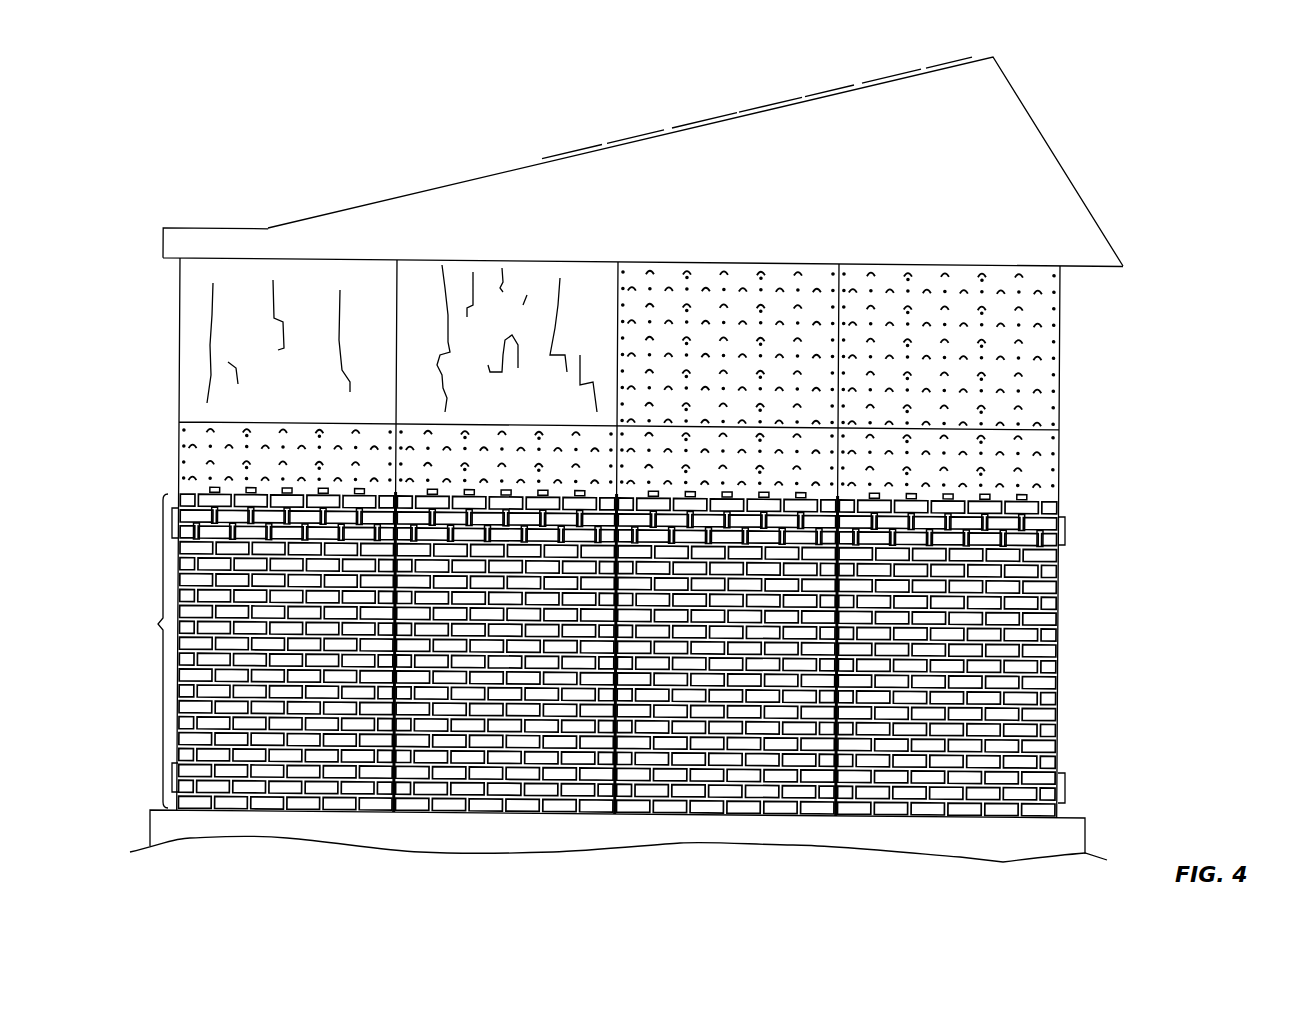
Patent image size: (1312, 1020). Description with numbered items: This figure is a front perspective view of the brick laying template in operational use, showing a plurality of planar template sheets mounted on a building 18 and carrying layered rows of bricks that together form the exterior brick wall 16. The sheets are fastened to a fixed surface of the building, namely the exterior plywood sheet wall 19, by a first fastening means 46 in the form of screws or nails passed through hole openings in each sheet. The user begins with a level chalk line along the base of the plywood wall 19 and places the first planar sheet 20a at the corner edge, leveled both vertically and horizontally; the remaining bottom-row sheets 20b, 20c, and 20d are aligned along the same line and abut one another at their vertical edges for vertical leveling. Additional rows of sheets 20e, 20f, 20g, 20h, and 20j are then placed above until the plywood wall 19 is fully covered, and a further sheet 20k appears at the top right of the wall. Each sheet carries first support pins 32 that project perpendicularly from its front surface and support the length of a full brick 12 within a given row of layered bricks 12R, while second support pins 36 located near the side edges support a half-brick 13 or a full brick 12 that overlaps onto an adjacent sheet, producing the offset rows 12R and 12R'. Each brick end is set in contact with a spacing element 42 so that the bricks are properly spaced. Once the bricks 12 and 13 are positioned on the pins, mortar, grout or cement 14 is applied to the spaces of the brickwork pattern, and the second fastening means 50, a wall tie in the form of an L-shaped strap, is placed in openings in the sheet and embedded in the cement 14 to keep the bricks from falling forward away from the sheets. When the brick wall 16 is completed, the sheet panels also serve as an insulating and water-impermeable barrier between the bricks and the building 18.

The brick 12 is at (1050, 655).
The half-brick 13 is at (1040, 682).
The mortar, grout or cement 14 is at (1050, 722).
The row of layered bricks 12R is at (629, 655).
The row of layered bricks 12R' is at (630, 654).
The exterior brick wall 16 is at (151, 651).
The building 18 is at (738, 99).
The exterior plywood sheet wall 19 is at (422, 282).
The first planar sheet 20a is at (295, 814).
The planar sheet 20b is at (510, 815).
The planar sheet 20c is at (765, 818).
The planar sheet 20d is at (975, 819).
The planar sheet 20e is at (220, 422).
The planar sheet 20f is at (510, 422).
The planar sheet 20g is at (640, 423).
The planar sheet 20h is at (1038, 430).
The planar sheet 20j is at (760, 258).
The stucco wall panel 20k is at (925, 258).
The first support pin 32 is at (343, 406).
The second support pin 36 is at (183, 448).
The spacing element 42 is at (270, 470).
The first fastening means 46 is at (183, 430).
The second fastening means 50 is at (247, 463).